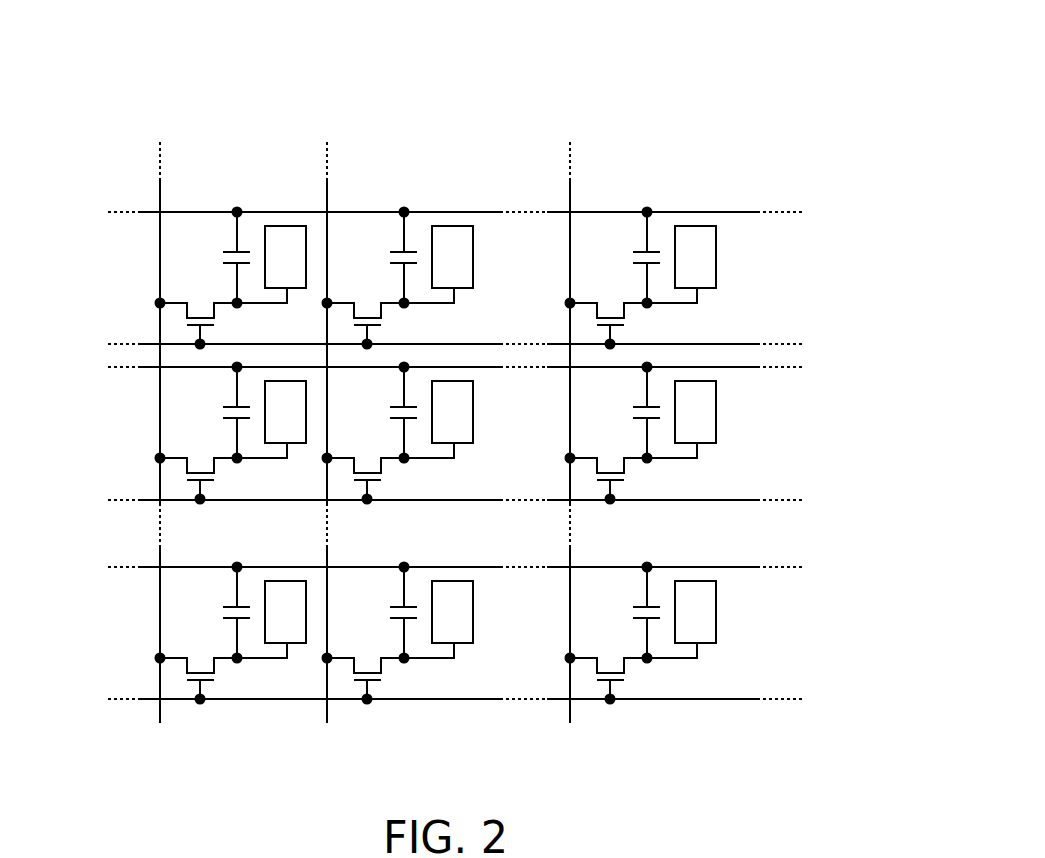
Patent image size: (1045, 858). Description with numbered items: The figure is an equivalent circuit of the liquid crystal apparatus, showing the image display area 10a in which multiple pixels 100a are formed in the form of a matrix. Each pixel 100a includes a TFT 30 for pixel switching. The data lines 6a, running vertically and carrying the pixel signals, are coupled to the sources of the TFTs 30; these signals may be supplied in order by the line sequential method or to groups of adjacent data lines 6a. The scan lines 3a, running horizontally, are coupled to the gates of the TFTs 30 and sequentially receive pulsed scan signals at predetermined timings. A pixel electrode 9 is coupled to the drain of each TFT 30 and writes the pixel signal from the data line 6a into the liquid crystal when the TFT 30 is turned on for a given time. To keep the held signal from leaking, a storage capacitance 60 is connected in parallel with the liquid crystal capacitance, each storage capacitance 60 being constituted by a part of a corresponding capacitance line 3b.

The image display area 10a is at (677, 78).
The data line 6a is at (161, 195).
The scan line 3a is at (737, 344).
The capacitance line 3b is at (723, 212).
The pixel 100a is at (201, 278).
The storage capacitance 60 is at (220, 255).
The TFT 30 is at (213, 319).
The pixel electrode 9 is at (297, 283).